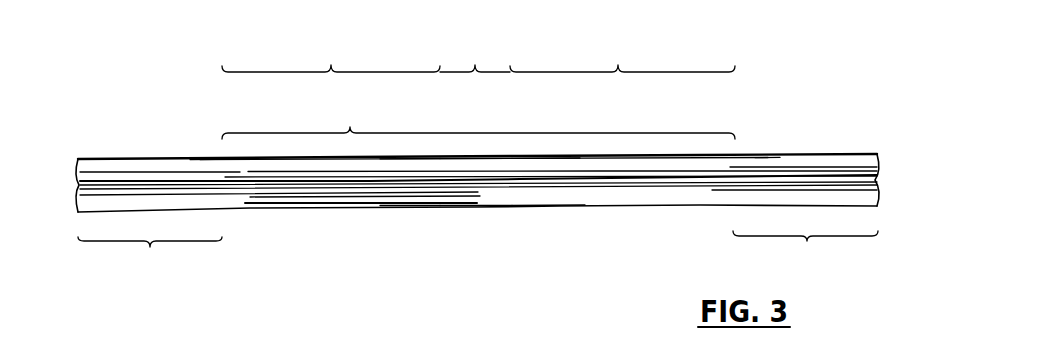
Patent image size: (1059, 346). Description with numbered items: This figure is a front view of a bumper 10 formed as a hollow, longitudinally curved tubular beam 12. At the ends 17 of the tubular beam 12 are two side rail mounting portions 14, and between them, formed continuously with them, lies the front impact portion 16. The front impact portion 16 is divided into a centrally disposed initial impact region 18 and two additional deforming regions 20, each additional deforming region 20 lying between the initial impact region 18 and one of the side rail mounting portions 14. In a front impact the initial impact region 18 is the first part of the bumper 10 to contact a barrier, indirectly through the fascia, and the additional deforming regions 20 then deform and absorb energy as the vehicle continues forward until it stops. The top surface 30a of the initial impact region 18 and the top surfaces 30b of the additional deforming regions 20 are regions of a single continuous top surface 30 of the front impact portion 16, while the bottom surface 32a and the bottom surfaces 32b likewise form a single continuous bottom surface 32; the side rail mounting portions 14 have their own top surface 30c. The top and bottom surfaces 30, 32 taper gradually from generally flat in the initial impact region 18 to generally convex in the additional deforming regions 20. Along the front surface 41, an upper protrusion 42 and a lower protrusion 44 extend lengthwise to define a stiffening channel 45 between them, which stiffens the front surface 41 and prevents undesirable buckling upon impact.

The bumper 10 is at (820, 90).
The tubular beam 12 is at (180, 157).
The side rail mounting portions 14 is at (478, 255).
The front impact portion 16 is at (478, 119).
The ends of the tubular beam 17 is at (122, 152).
The initial impact region 18 is at (475, 55).
The additional deforming regions 20 is at (478, 55).
The top surface 30 is at (512, 152).
The top surface of the initial impact region 30a is at (476, 157).
The top surface of the additional deforming regions 30b is at (403, 155).
The top surface of the side rail mounting portions 30c is at (202, 155).
The bottom surface 32 is at (513, 210).
The bottom surface of the initial impact region 32a is at (478, 210).
The bottom surface of the additional deforming regions 32b is at (405, 209).
The front surface 41 is at (263, 198).
The upper protrusion 42 is at (313, 170).
The lower protrusion 44 is at (344, 198).
The stiffening channel 45 is at (395, 186).